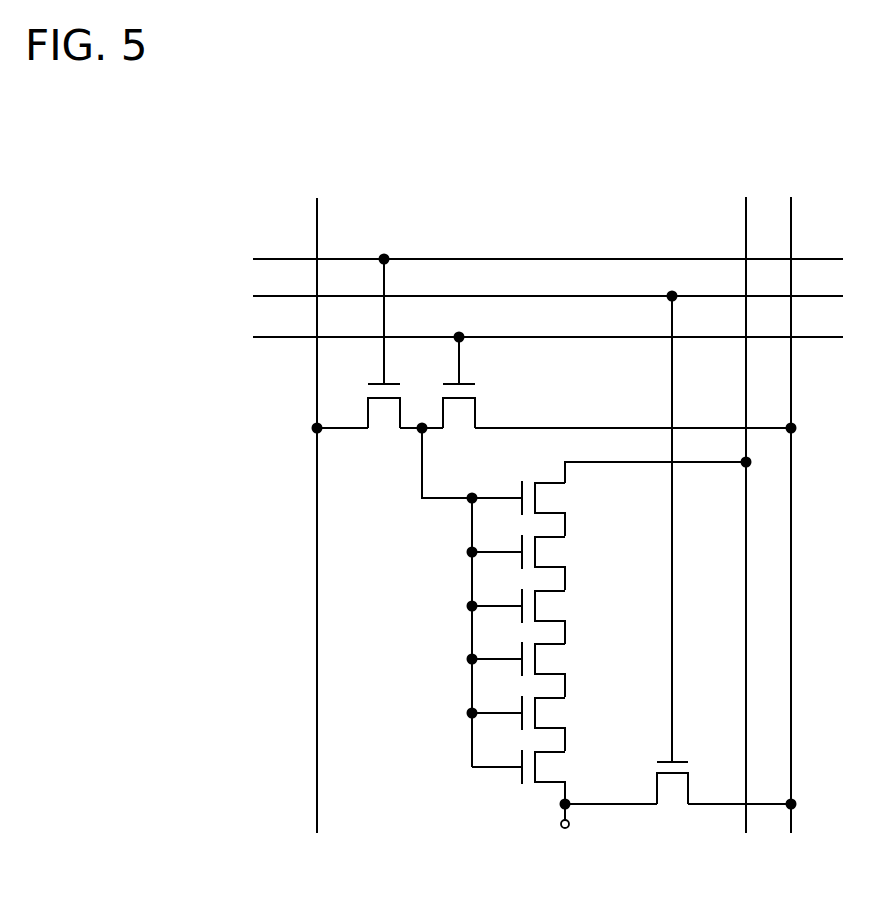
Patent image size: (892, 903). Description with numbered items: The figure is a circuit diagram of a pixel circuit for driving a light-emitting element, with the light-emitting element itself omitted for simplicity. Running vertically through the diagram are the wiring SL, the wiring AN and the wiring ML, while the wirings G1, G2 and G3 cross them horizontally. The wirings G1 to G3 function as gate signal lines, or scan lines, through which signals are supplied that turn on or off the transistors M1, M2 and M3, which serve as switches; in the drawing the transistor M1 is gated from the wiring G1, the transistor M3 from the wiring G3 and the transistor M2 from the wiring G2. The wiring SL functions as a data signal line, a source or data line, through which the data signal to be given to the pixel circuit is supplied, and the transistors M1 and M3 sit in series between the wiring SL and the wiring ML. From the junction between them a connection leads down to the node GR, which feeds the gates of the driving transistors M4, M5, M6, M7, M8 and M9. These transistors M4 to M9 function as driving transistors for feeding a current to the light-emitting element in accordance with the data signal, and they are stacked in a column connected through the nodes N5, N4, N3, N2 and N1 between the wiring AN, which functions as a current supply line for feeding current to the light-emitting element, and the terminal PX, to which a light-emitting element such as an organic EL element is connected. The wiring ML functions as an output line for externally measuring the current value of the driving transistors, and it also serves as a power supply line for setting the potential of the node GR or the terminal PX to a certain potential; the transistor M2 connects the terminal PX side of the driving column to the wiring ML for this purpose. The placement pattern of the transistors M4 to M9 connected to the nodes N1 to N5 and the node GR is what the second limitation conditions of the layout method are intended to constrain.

The wiring SL is at (314, 503).
The wiring AN is at (741, 503).
The wiring ML is at (789, 503).
The wiring G1 is at (528, 261).
The wiring G2 is at (528, 298).
The wiring G3 is at (528, 339).
The transistor M1 is at (382, 356).
The transistor M2 is at (672, 564).
The transistor M3 is at (457, 395).
The transistor M4 is at (535, 508).
The transistor M5 is at (535, 562).
The transistor M6 is at (535, 616).
The transistor M7 is at (535, 669).
The transistor M8 is at (535, 723).
The transistor M9 is at (535, 777).
The node N1 is at (566, 740).
The node N2 is at (566, 686).
The node N3 is at (566, 633).
The node N4 is at (566, 579).
The node N5 is at (566, 525).
The node GR is at (421, 507).
The terminal PX is at (561, 832).